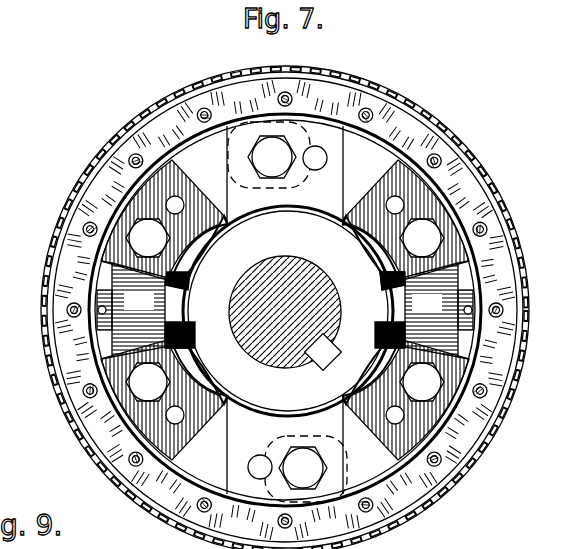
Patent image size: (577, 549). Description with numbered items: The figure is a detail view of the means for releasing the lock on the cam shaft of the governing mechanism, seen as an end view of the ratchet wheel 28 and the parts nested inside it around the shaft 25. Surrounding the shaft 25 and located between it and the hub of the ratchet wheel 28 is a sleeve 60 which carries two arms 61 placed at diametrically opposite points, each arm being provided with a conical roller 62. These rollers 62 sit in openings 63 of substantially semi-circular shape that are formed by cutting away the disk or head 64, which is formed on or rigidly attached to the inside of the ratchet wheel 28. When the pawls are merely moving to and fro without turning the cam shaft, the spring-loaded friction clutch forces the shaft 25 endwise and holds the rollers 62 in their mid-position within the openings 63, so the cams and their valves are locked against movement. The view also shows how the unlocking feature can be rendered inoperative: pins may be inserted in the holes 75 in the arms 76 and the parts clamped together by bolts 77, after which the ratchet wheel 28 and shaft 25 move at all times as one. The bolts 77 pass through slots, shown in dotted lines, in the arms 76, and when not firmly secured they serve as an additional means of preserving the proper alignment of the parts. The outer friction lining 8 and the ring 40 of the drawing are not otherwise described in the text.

The clutch driven disc 8 is at (289, 70).
The shaft 25 is at (285, 366).
The ratchet wheel 28 is at (393, 510).
The cushion plate 40 is at (160, 510).
The sleeve 60 is at (288, 311).
The arms 61 is at (100, 303).
The conical roller 62 is at (285, 310).
The openings 63 is at (108, 354).
The disk or head 64 is at (423, 423).
The holes 75 is at (315, 170).
The arms 76 is at (338, 167).
The bolts 77 is at (247, 160).